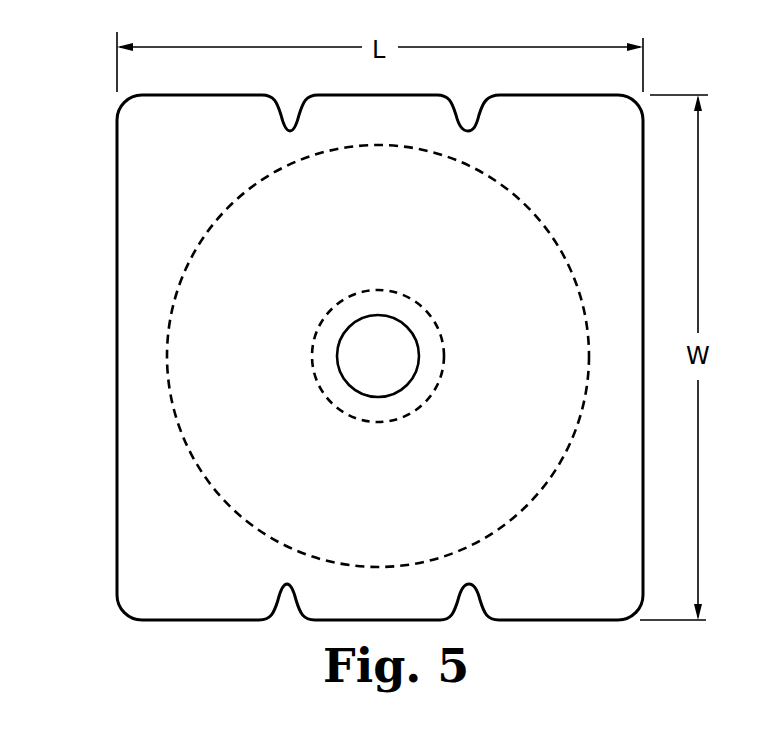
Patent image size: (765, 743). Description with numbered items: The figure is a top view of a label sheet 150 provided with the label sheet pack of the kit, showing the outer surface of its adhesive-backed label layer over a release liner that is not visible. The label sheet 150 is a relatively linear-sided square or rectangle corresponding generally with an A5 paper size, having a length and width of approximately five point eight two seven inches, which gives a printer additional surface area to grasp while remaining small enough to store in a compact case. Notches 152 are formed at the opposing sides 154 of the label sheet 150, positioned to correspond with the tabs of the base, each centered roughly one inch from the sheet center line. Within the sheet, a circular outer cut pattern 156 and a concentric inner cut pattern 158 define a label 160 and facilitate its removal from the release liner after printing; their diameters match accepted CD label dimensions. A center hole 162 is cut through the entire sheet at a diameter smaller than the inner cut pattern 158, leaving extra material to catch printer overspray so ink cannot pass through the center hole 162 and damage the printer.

The label sheet 150 is at (88, 131).
The notches 152 is at (281, 111).
The opposing sides 154 is at (240, 95).
The outer cut pattern 156 is at (510, 189).
The inner cut pattern 158 is at (408, 297).
The label 160 is at (198, 360).
The center hole 162 is at (405, 385).